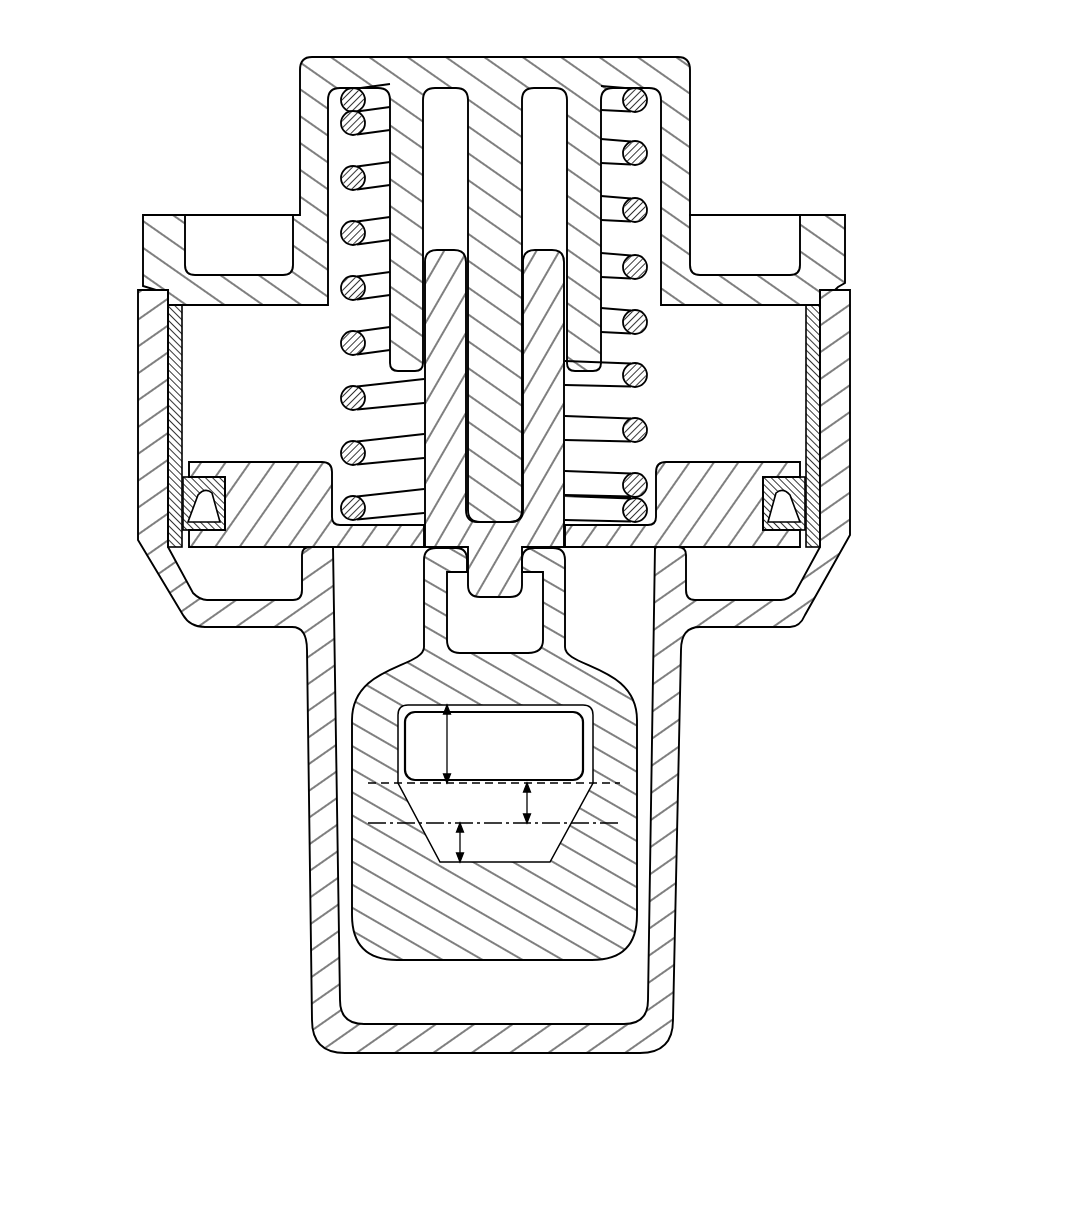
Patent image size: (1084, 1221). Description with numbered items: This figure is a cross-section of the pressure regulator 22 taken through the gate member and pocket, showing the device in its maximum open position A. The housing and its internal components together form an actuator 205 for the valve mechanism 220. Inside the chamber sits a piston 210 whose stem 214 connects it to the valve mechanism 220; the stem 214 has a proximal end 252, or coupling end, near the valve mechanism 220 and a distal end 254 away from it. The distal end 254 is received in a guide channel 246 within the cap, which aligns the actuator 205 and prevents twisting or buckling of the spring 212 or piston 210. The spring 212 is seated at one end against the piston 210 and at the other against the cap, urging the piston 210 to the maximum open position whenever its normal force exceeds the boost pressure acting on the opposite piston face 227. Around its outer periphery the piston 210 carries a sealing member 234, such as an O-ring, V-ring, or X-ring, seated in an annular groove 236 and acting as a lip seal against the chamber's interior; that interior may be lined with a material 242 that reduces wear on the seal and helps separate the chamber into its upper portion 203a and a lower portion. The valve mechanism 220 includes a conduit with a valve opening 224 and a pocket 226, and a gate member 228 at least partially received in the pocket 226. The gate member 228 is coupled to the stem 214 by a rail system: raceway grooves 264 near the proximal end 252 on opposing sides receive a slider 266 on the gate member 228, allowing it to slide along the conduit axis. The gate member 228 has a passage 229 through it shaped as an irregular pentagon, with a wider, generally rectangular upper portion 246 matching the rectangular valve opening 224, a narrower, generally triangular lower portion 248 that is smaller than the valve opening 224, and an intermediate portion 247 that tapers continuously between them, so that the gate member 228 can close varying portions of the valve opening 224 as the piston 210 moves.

The pressure regulator 22 is at (758, 80).
The guide channel 246 is at (462, 117).
The spring 212 is at (645, 150).
The distal end 254 is at (437, 270).
The stem 214 is at (548, 270).
The material 242 is at (175, 343).
The actuator 205 is at (798, 352).
The upper portion 203a is at (177, 385).
The annular groove 236 is at (200, 485).
The piston 210 is at (280, 488).
The sealing member 234 is at (785, 482).
The raceway grooves 264 is at (447, 548).
The piston face 227 is at (732, 547).
The slider 266 is at (432, 617).
The proximal end 252 is at (496, 585).
The valve opening 224 is at (585, 749).
The intermediate portion 247 is at (527, 803).
The lower portion 248 is at (463, 842).
The valve mechanism 220 is at (645, 830).
The passage 229 is at (430, 846).
The gate member 228 is at (402, 950).
The pocket 226 is at (646, 988).